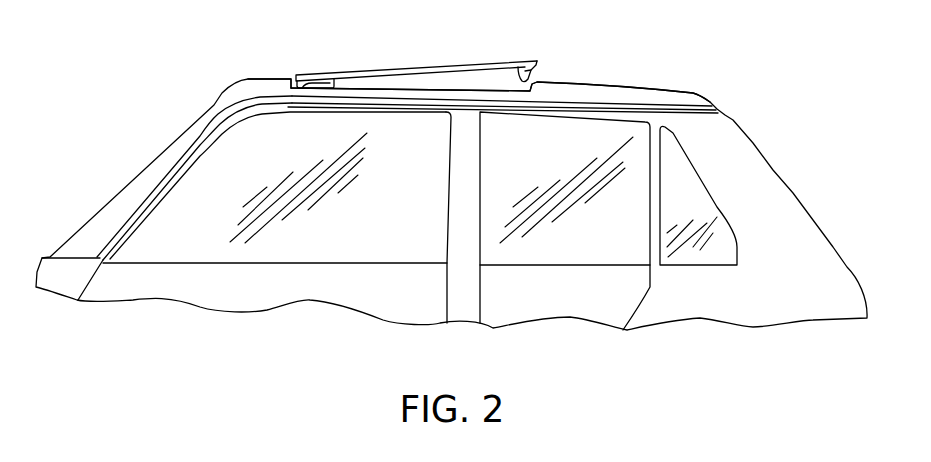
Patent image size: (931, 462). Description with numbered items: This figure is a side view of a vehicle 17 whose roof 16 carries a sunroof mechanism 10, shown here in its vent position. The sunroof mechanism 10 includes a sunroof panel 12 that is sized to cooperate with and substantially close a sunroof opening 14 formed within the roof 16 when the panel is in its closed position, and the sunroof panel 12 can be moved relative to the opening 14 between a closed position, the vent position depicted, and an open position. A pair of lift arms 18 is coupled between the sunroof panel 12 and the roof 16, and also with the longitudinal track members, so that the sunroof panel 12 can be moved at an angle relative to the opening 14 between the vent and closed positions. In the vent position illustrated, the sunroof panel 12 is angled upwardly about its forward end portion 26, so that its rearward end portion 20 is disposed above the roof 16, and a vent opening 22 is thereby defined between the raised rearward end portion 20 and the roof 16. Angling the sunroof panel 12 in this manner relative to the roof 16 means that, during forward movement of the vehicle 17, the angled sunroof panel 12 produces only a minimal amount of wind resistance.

The sunroof mechanism 10 is at (442, 44).
The sunroof panel 12 is at (365, 70).
The sunroof opening 14 is at (523, 78).
The roof 16 is at (682, 92).
The vehicle 17 is at (775, 142).
The lift arms 18 is at (317, 81).
The rearward end portion 20 is at (538, 62).
The vent opening 22 is at (554, 74).
The forward end portion 26 is at (294, 77).